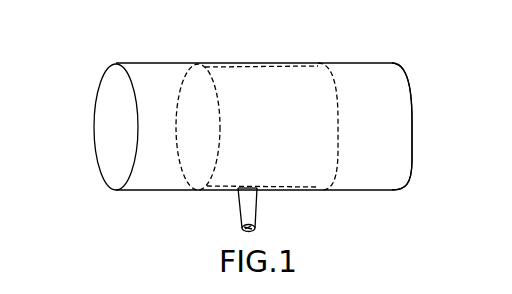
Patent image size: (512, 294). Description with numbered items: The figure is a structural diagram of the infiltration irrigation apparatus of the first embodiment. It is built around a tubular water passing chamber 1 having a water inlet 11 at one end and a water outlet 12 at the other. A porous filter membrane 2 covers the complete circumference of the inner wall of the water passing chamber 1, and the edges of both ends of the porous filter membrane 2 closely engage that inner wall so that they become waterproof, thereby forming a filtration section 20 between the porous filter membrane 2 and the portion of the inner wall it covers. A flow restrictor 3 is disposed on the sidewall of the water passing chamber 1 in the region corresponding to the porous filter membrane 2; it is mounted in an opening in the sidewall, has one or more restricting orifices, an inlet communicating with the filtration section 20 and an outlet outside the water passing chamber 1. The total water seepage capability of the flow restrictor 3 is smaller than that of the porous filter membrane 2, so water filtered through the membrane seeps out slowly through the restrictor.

The water passing chamber 1 is at (115, 88).
The water inlet 11 is at (94, 130).
The water outlet 12 is at (413, 118).
The porous filter membrane 2 is at (245, 89).
The flow restrictor 3 is at (238, 207).
The filtration section 20 is at (281, 189).